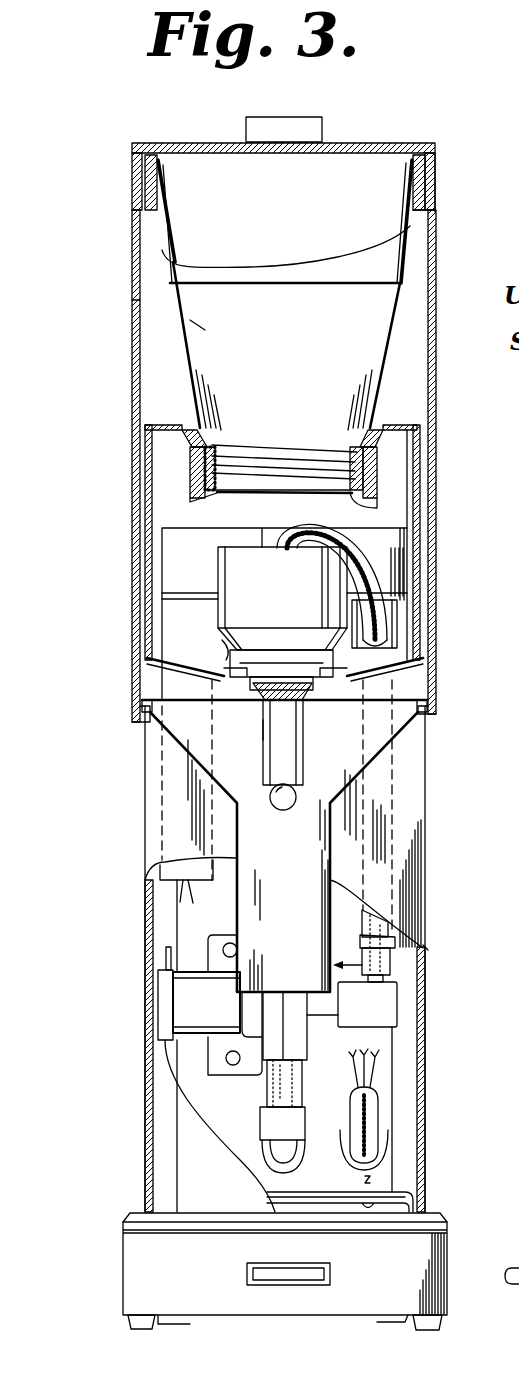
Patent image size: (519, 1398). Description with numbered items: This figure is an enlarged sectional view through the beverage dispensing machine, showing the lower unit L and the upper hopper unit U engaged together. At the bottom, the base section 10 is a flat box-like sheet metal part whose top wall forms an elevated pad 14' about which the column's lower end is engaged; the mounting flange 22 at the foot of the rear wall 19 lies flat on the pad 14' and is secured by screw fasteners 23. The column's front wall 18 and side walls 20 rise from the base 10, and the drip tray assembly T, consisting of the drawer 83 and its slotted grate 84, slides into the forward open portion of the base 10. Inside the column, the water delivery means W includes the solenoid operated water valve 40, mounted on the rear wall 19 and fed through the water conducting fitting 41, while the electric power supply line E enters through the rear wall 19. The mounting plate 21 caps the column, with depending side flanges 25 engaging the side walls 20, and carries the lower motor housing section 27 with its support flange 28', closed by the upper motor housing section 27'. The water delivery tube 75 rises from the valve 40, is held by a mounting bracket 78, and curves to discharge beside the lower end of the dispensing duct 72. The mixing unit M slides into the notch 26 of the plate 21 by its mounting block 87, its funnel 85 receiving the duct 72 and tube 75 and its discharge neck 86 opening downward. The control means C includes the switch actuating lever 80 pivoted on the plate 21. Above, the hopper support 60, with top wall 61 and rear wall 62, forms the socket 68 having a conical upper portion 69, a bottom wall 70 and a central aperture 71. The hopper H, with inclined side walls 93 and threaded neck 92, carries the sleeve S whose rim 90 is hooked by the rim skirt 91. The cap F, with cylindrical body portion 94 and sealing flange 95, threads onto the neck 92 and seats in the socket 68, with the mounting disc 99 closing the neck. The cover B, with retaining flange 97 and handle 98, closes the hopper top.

The handle 98 is at (292, 122).
The upper cover B is at (385, 140).
The rim skirt 91 is at (437, 163).
The retaining flange 97 is at (436, 185).
The housing sleeve S is at (128, 236).
The hopper H is at (400, 250).
The rim 90 is at (413, 187).
The upper hopper unit U is at (126, 300).
The side walls 93 is at (190, 322).
The sealing flange 95 is at (210, 440).
The top wall 61 is at (150, 423).
The hopper support 60 is at (138, 432).
The conical upper portion 69 is at (428, 425).
The rear wall 62 is at (420, 443).
The cap F is at (388, 410).
The socket 68 is at (207, 460).
The cylindrical body portion 94 is at (200, 462).
The neck 92 is at (300, 455).
The mounting disc 99 is at (277, 493).
The bottom wall 70 is at (375, 505).
The central aperture 71 is at (230, 493).
The upper motor housing section 27' is at (451, 545).
The funnel 85 is at (217, 557).
The dispensing duct 72 is at (270, 537).
The water delivery tube 75 is at (380, 560).
The support flange 28' is at (239, 575).
The lower motor housing section 27 is at (142, 605).
The notch 26 is at (258, 650).
The discharge neck 86 is at (292, 652).
The mounting bracket 78 is at (395, 618).
The mounting plate 21 is at (193, 657).
The side flanges 25 is at (160, 688).
The mounting block 87 is at (304, 748).
The mixing unit M is at (255, 728).
The control means C is at (230, 912).
The front wall 18 is at (145, 1140).
The side walls 20 is at (425, 1008).
The lower unit L is at (430, 945).
The water delivery means W is at (182, 1062).
The solenoid operated water valve 40 is at (173, 1016).
The water conducting fitting 41 is at (272, 1128).
The switch actuating lever 80 is at (393, 962).
The rear wall 19 is at (400, 1040).
The electric power supply line E is at (385, 1105).
The mounting flange 22 is at (378, 1185).
The pad 14' is at (387, 1183).
The grate 84 is at (177, 1208).
The screw fasteners 23 is at (365, 1208).
The base section 10 is at (114, 1331).
The drawer 83 is at (228, 1315).
The drip tray assembly T is at (512, 1233).